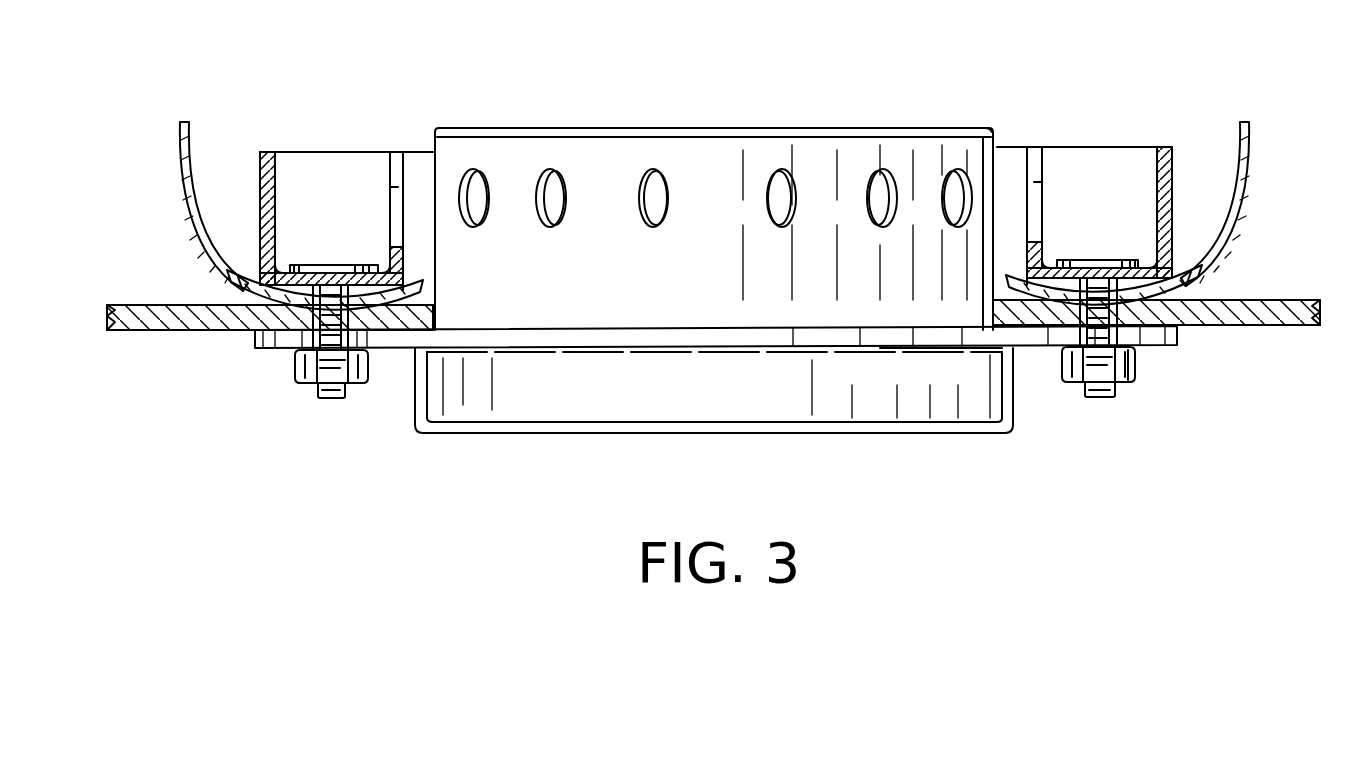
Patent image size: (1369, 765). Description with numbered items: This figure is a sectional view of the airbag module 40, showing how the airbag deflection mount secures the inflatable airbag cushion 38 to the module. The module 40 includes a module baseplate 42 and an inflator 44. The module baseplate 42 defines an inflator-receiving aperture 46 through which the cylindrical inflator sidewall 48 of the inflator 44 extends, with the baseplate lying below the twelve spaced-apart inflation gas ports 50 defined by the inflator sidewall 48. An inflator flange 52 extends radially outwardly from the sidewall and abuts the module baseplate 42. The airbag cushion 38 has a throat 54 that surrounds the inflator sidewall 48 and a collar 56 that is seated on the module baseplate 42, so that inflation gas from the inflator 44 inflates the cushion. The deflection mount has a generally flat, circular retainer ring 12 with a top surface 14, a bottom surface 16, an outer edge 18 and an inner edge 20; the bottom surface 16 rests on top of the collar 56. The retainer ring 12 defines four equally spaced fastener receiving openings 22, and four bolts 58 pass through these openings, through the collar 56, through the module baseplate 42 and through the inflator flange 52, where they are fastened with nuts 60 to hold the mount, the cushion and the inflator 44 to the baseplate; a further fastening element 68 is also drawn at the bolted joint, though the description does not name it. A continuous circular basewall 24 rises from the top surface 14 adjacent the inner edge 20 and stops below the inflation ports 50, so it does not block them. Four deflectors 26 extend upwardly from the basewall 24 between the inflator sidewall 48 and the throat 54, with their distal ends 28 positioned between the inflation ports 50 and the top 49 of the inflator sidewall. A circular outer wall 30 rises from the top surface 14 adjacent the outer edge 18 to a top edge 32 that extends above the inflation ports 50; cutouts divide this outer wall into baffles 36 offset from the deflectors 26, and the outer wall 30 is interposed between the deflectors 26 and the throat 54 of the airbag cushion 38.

The retainer ring 12 is at (377, 260).
The top surface 14 is at (286, 271).
The bottom surface 16 is at (383, 331).
The outer edge 18 is at (220, 318).
The inner edge 20 is at (412, 274).
The fastener receiving openings 22 is at (338, 283).
The basewall 24 is at (404, 258).
The deflectors 26 is at (404, 175).
The distal ends 28 is at (410, 152).
The outer wall 30 is at (251, 237).
The top edge 32 is at (344, 189).
The baffles 36 is at (280, 173).
The airbag cushion 38 is at (1262, 133).
The airbag module 40 is at (714, 216).
The module baseplate 42 is at (150, 331).
The inflator 44 is at (934, 124).
The inflator-receiving aperture 46 is at (990, 302).
The inflator sidewall 48 is at (733, 316).
The top of the inflator sidewall 49 is at (985, 128).
The inflation gas ports 50 is at (473, 172).
The inflator flange 52 is at (922, 348).
The throat 54 is at (183, 173).
The collar 56 is at (233, 277).
The bolts 58 is at (330, 399).
The nuts 60 is at (1137, 364).
The nut 68 is at (296, 370).